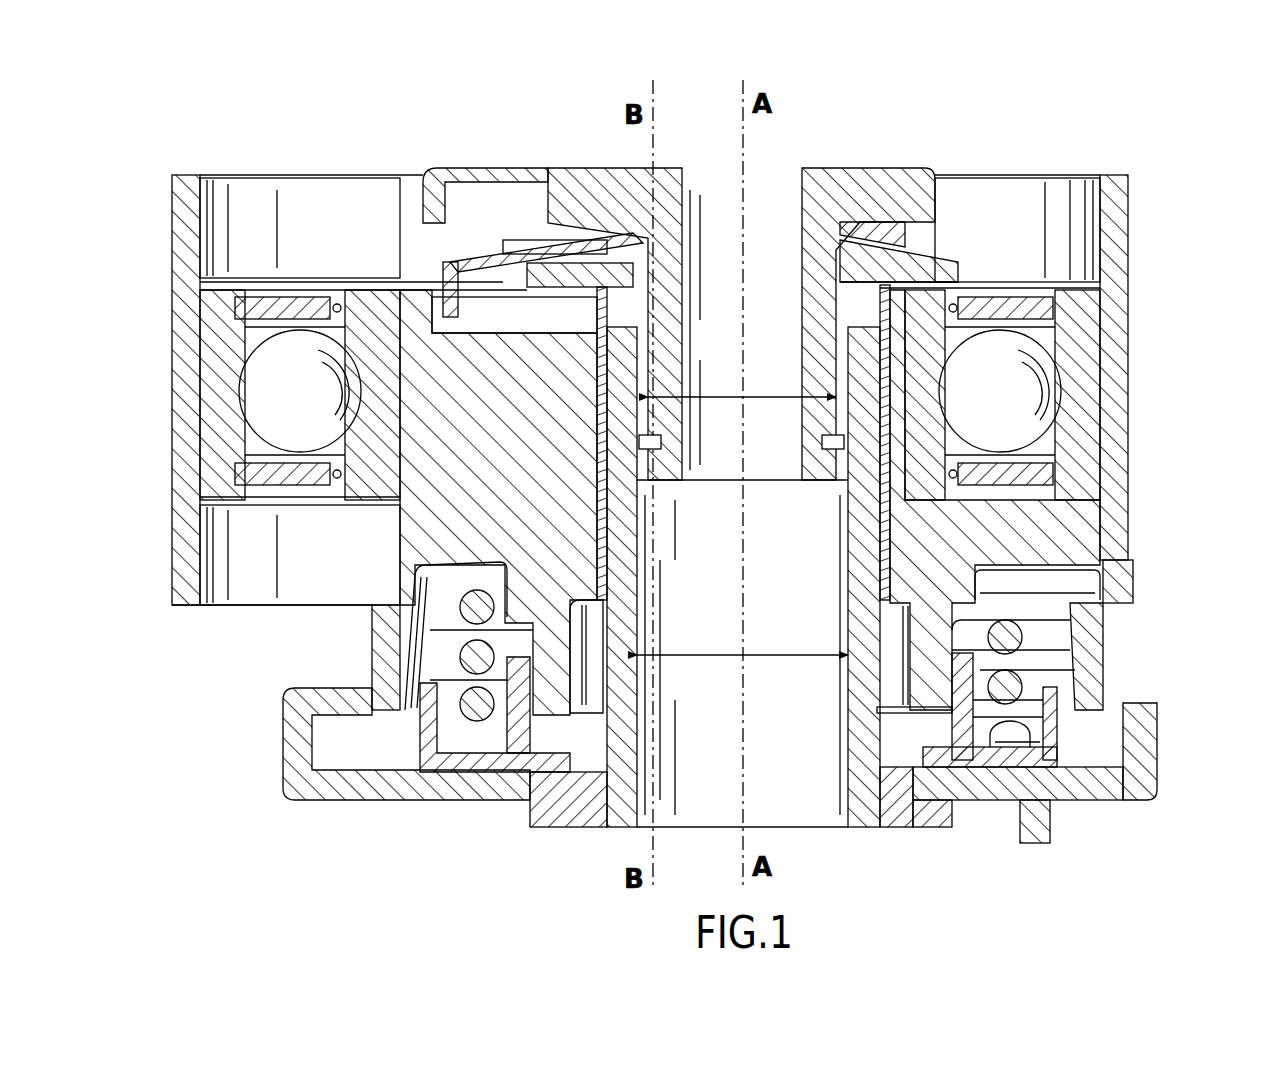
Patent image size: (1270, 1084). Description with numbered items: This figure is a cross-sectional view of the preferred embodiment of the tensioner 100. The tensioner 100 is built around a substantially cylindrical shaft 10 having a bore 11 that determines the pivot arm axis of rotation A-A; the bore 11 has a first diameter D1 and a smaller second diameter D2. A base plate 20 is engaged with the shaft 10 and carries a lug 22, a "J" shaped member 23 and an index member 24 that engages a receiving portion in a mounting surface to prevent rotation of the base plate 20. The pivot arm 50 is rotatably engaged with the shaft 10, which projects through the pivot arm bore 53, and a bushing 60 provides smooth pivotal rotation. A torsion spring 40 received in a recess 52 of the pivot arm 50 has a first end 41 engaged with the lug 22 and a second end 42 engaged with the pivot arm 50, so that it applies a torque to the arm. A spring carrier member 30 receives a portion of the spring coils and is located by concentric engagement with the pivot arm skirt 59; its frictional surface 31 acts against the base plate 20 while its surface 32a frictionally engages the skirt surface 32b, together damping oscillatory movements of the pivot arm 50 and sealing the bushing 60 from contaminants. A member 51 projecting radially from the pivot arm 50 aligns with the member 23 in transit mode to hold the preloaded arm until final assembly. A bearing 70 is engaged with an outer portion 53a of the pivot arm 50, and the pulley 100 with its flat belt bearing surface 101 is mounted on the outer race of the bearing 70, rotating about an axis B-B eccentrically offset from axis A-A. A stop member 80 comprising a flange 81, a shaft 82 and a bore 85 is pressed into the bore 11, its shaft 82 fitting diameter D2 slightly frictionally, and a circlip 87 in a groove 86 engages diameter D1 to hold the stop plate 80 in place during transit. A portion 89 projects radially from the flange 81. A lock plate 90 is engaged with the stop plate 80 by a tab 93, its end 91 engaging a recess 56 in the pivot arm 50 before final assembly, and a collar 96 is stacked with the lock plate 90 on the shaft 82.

The shaft 10 is at (905, 830).
The bore 11 is at (822, 786).
The base plate 20 is at (1080, 800).
The lug 22 is at (1160, 800).
The "J" shaped member 23 is at (283, 782).
The index member 24 is at (1035, 844).
The spring carrier member 30 is at (395, 735).
The frictional surface 31 is at (470, 774).
The surface 32a is at (520, 752).
The skirt surface 32b is at (470, 655).
The torsion spring 40 is at (1020, 678).
The first end of torsion spring 41 is at (1100, 735).
The second end of torsion spring 42 is at (1080, 590).
The pivot arm 50 is at (1105, 636).
The member 51 is at (365, 700).
The recess 52 is at (440, 610).
The pivot arm bore 53 is at (600, 392).
The outer portion of pivot arm 53a is at (425, 422).
The recess 56 is at (552, 330).
The pivot arm skirt 59 is at (585, 662).
The bushing 60 is at (893, 513).
The bearing 70 is at (1075, 345).
The stop member 80 is at (860, 168).
The flange 81 is at (566, 168).
The shaft 82 is at (782, 172).
The bore 85 is at (735, 315).
The groove 86 is at (660, 470).
The circlip 87 is at (842, 455).
The portion 89 is at (478, 168).
The lock plate 90 is at (945, 252).
The end 91 is at (440, 253).
The tab 93 is at (870, 228).
The collar 96 is at (963, 272).
The tensioner / pulley 100 is at (1118, 124).
The flat belt bearing surface 101 is at (1130, 397).
The first diameter D1 is at (742, 670).
The second diameter D2 is at (742, 411).